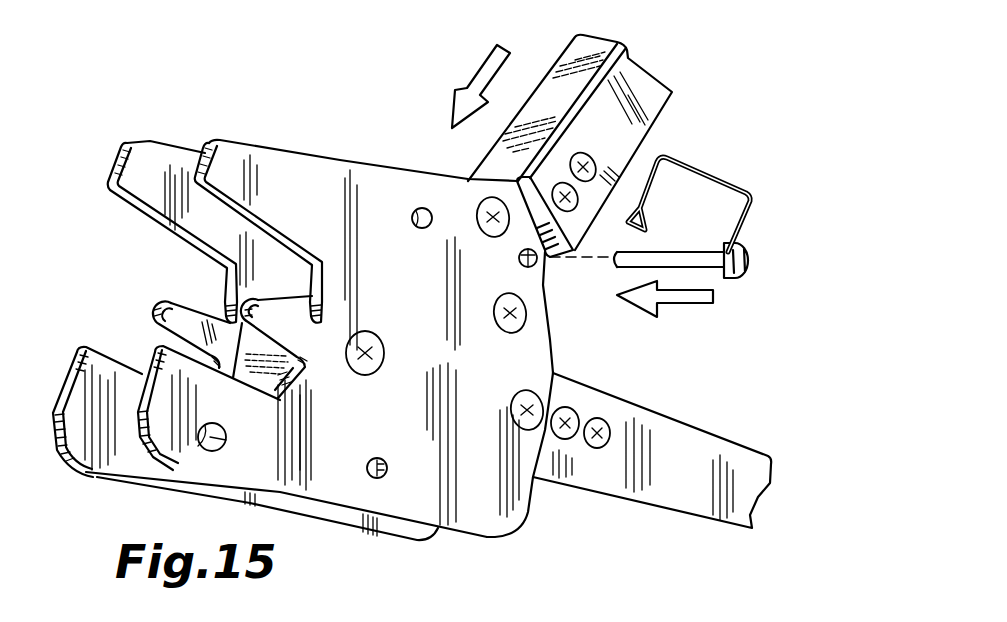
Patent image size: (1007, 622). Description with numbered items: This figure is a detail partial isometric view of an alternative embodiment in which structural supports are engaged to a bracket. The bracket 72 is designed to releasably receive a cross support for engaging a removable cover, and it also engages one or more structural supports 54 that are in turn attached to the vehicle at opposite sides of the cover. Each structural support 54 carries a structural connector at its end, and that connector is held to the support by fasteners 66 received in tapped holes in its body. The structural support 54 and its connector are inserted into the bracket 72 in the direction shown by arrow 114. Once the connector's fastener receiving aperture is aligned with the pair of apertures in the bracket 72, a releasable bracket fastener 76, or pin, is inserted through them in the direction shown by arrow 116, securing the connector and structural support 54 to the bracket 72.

The bracket 72 is at (421, 319).
The structural support 54 is at (643, 83).
The fasteners 66 is at (573, 133).
The releasable bracket fastener 76 is at (690, 254).
The arrow 114 is at (475, 72).
The arrow 116 is at (683, 307).